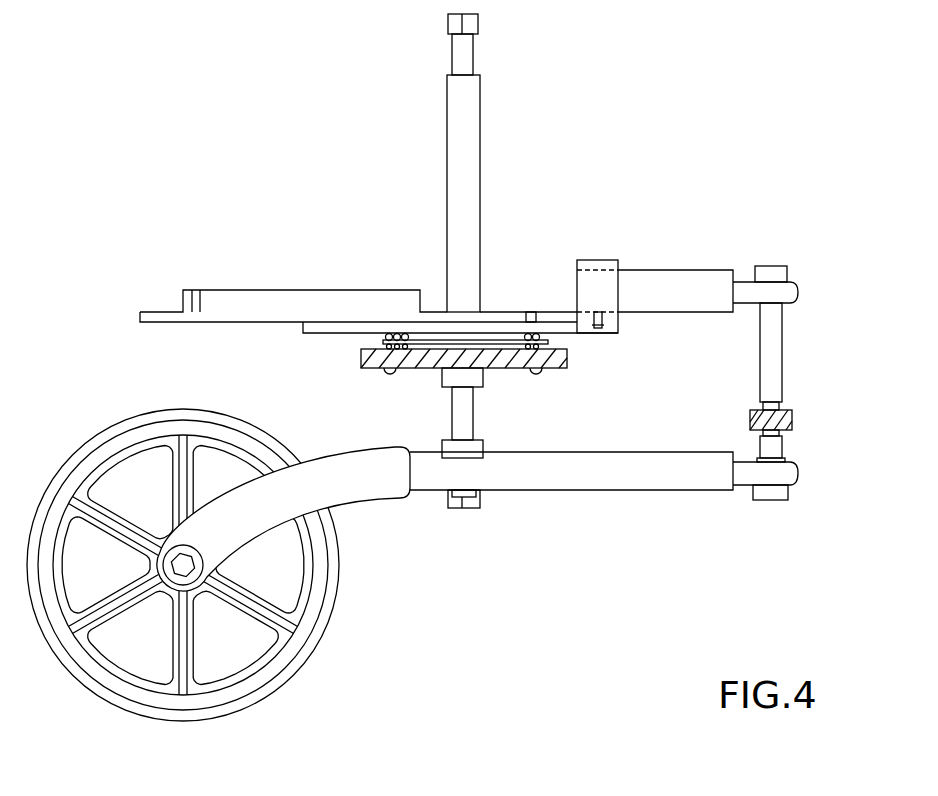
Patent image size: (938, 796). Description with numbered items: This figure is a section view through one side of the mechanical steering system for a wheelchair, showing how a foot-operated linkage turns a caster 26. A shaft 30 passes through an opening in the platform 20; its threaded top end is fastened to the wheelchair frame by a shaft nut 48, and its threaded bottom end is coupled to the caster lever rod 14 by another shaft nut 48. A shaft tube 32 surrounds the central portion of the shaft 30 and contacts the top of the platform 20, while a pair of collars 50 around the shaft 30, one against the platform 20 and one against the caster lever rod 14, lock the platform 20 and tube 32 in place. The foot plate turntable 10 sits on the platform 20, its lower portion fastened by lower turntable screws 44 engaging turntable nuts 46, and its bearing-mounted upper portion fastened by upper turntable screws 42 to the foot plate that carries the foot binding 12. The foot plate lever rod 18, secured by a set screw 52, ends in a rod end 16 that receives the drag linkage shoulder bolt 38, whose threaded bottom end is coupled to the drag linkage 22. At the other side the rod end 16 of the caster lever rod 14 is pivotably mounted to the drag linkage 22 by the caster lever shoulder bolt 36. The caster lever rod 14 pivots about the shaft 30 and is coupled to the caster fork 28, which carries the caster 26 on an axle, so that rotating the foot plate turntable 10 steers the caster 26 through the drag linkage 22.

The foot plate turntable 10 is at (410, 333).
The foot binding 12 is at (282, 298).
The caster lever rod 14 is at (560, 488).
The rod end 16 is at (790, 291).
The foot plate lever rod 18 is at (600, 262).
The platform 20 is at (360, 362).
The drag linkage 22 is at (795, 420).
The caster 26 is at (100, 438).
The caster fork 28 is at (355, 492).
The shaft 30 is at (458, 50).
The shaft tube 32 is at (468, 186).
The caster lever shoulder bolt 36 is at (768, 505).
The drag linkage shoulder bolt 38 is at (783, 335).
The upper turntable screw 42 is at (527, 312).
The lower turntable screw 44 is at (390, 370).
The turntable nut 46 is at (362, 342).
The shaft nut 48 is at (478, 24).
The collar 50 is at (448, 440).
The set screw 52 is at (600, 335).